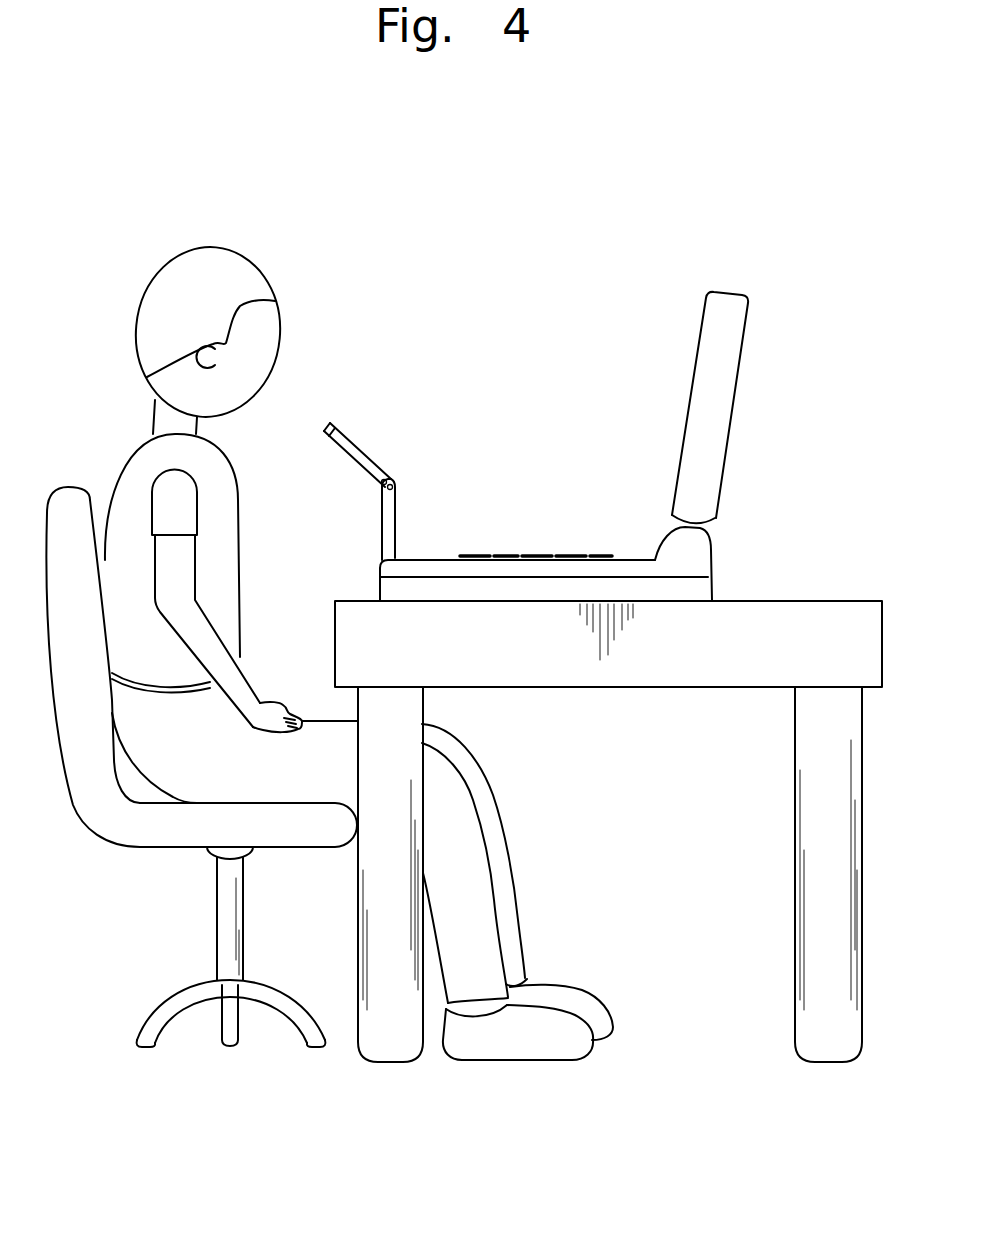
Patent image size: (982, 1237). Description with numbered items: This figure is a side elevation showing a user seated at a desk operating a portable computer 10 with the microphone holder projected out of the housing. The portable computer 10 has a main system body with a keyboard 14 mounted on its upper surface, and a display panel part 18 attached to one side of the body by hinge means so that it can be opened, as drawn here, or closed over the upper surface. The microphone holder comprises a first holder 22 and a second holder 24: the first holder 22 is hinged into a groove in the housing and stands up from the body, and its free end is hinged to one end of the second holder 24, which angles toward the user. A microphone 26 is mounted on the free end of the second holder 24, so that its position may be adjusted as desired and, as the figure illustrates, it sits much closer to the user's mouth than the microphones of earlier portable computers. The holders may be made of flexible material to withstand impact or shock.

The portable computer 10 is at (518, 446).
The keyboard 14 is at (545, 556).
The display panel part 18 is at (713, 347).
The first holder 22 is at (388, 510).
The second holder 24 is at (350, 432).
The microphone 26 is at (325, 422).